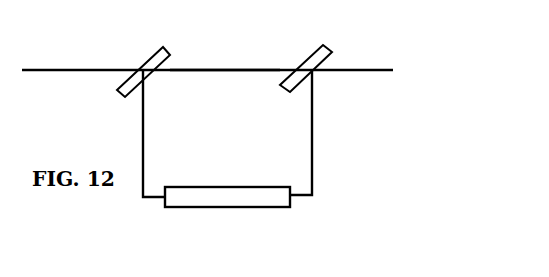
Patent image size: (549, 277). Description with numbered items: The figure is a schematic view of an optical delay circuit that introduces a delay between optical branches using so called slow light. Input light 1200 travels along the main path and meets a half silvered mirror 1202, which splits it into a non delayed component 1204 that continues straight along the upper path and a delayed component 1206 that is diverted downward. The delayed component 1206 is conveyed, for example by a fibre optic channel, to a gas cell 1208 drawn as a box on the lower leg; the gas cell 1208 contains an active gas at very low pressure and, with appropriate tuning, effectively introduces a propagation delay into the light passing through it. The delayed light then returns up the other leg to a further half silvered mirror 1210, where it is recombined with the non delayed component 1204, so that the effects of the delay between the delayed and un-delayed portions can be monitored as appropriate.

The input light 1200 is at (437, 33).
The half silvered mirror 1202 is at (324, 43).
The non delayed component 1204 is at (243, 67).
The delayed component 1206 is at (383, 148).
The gas cell 1208 is at (253, 185).
The further half silvered mirror 1210 is at (137, 61).